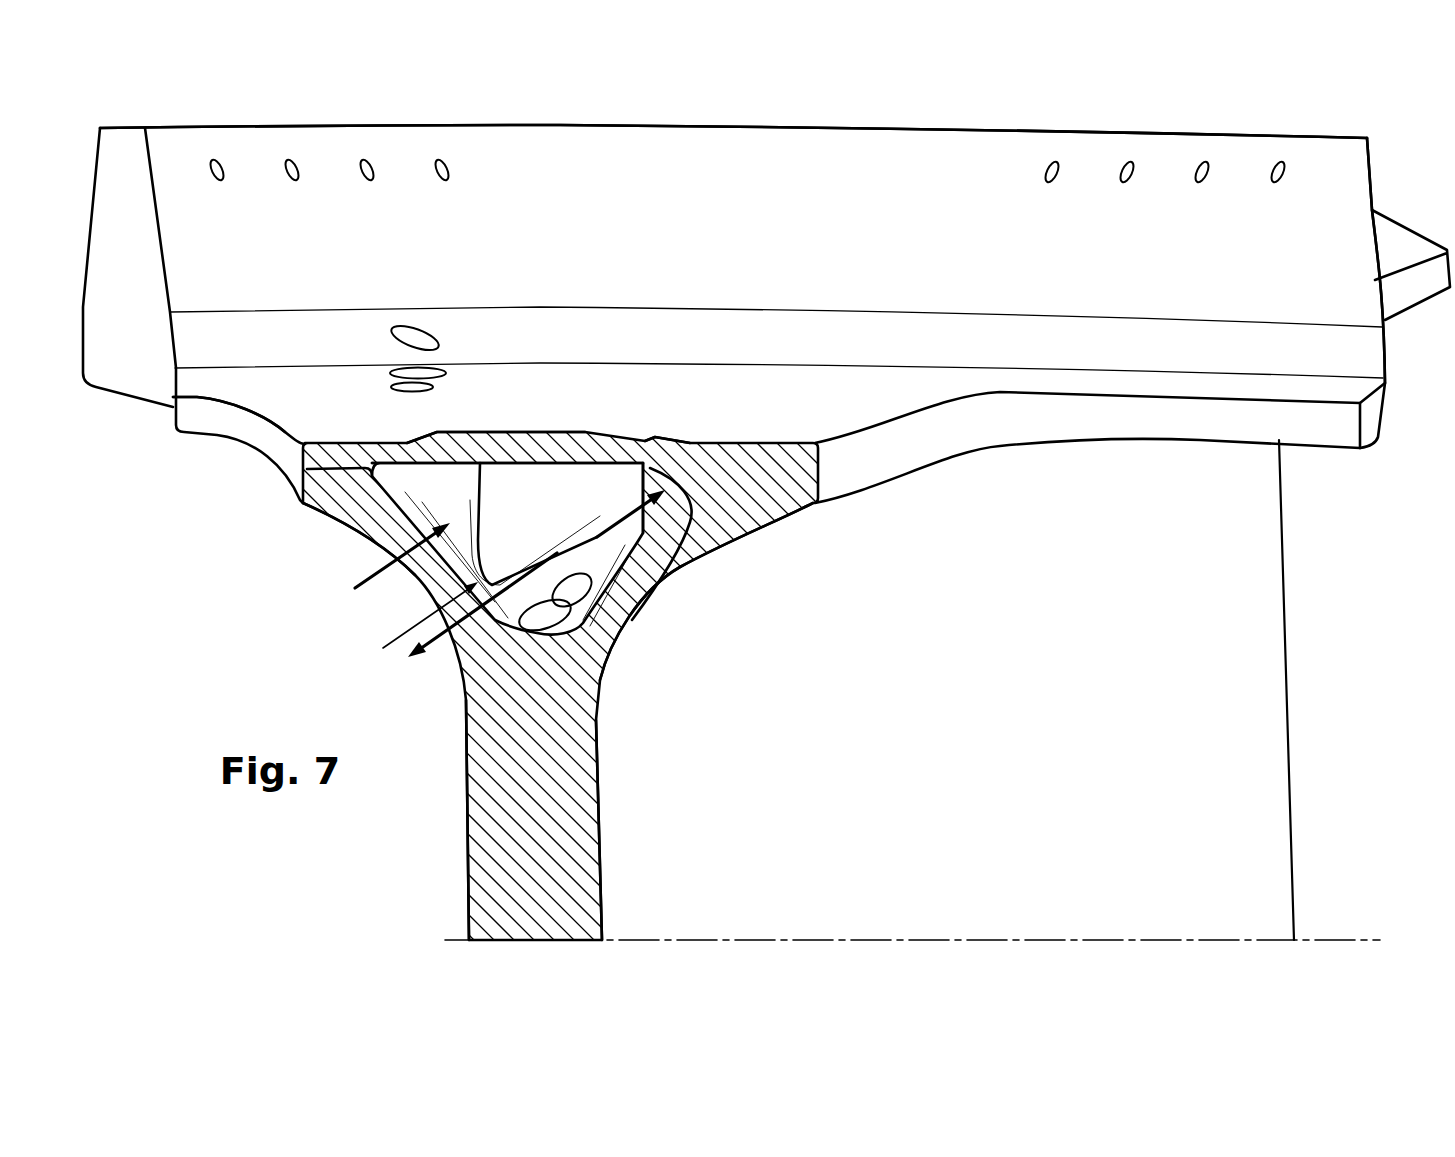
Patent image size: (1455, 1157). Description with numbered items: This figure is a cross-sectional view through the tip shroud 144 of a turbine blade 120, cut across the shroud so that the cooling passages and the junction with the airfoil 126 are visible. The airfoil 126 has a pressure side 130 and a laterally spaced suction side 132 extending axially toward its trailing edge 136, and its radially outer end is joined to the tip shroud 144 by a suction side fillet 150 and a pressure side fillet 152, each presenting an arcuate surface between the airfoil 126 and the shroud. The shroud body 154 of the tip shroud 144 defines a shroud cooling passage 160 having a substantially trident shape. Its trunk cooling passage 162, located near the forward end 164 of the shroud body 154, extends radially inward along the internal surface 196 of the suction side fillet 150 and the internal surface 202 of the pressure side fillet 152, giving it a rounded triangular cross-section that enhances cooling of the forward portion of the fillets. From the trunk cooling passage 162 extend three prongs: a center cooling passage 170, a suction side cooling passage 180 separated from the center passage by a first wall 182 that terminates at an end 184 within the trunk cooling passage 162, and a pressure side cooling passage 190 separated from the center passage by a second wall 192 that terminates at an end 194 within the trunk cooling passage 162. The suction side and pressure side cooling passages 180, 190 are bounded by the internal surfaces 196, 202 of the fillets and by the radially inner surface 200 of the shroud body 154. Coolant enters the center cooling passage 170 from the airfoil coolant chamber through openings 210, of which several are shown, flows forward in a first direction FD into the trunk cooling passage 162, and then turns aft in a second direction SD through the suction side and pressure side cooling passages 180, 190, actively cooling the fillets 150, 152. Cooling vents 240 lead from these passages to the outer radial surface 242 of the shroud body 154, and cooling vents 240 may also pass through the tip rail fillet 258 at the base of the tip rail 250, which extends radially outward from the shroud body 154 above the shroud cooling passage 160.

The turbine blade 120 is at (1199, 114).
The tip shroud 144 is at (1037, 114).
The tip rail 250 is at (1237, 178).
The tip rail fillet 258 is at (437, 327).
The outer radial surface 242 is at (277, 392).
The cooling vent 240 is at (398, 383).
The suction side cooling passage 180 is at (427, 452).
The shroud cooling passage 160 is at (455, 450).
The first wall 182 is at (527, 513).
The end of first wall 184 is at (495, 493).
The center cooling passage 170 is at (567, 490).
The end of second wall 194 is at (598, 500).
The second wall 192 is at (663, 447).
The shroud body 154 is at (272, 459).
The forward end 164 is at (305, 470).
The radially inner surface 200 is at (345, 520).
The internal surface of suction side fillet 196 is at (365, 512).
The second direction SD is at (352, 580).
The suction side fillet 150 is at (435, 577).
The trunk cooling passage 162 is at (383, 648).
The first direction FD is at (440, 668).
The suction side 132 is at (466, 768).
The pressure side 130 is at (1095, 893).
The trailing edge 136 is at (1286, 668).
The airfoil 126 is at (1290, 787).
The pressure side cooling passage 190 is at (693, 464).
The internal surface of pressure side fillet 202 is at (690, 508).
The pressure side fillet 152 is at (660, 583).
The opening 210 is at (625, 630).